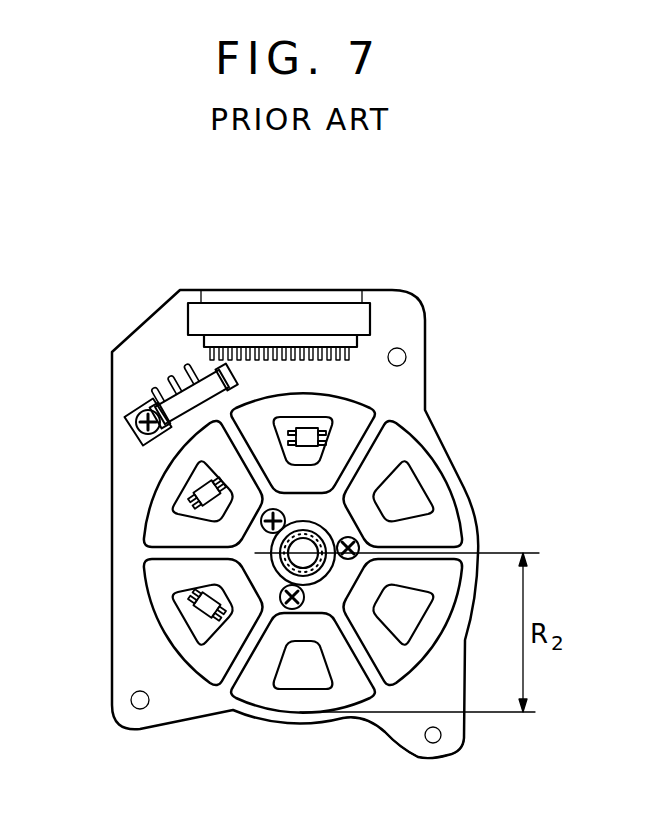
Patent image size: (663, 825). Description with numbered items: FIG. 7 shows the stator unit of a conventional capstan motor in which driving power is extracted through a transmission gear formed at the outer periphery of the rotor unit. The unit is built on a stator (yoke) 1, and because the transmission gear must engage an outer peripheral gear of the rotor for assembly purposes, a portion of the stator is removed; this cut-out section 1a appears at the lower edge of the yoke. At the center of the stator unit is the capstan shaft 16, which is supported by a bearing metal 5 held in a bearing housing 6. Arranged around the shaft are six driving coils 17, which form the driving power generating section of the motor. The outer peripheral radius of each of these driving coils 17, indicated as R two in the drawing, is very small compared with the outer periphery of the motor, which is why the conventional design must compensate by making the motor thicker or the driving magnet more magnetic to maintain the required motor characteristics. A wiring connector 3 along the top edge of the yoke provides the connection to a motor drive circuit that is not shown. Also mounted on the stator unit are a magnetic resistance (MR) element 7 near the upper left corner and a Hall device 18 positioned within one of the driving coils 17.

The stator (yoke) 1 is at (405, 330).
The cut-out section 1a is at (393, 733).
The wiring connector 3 is at (330, 318).
The bearing metal 5 is at (273, 571).
The bearing housing 6 is at (272, 541).
The magnetic resistance (MR) element 7 is at (140, 436).
The capstan shaft 16 is at (310, 540).
The driving coils 17 is at (447, 530).
The Hall device 18 is at (310, 428).